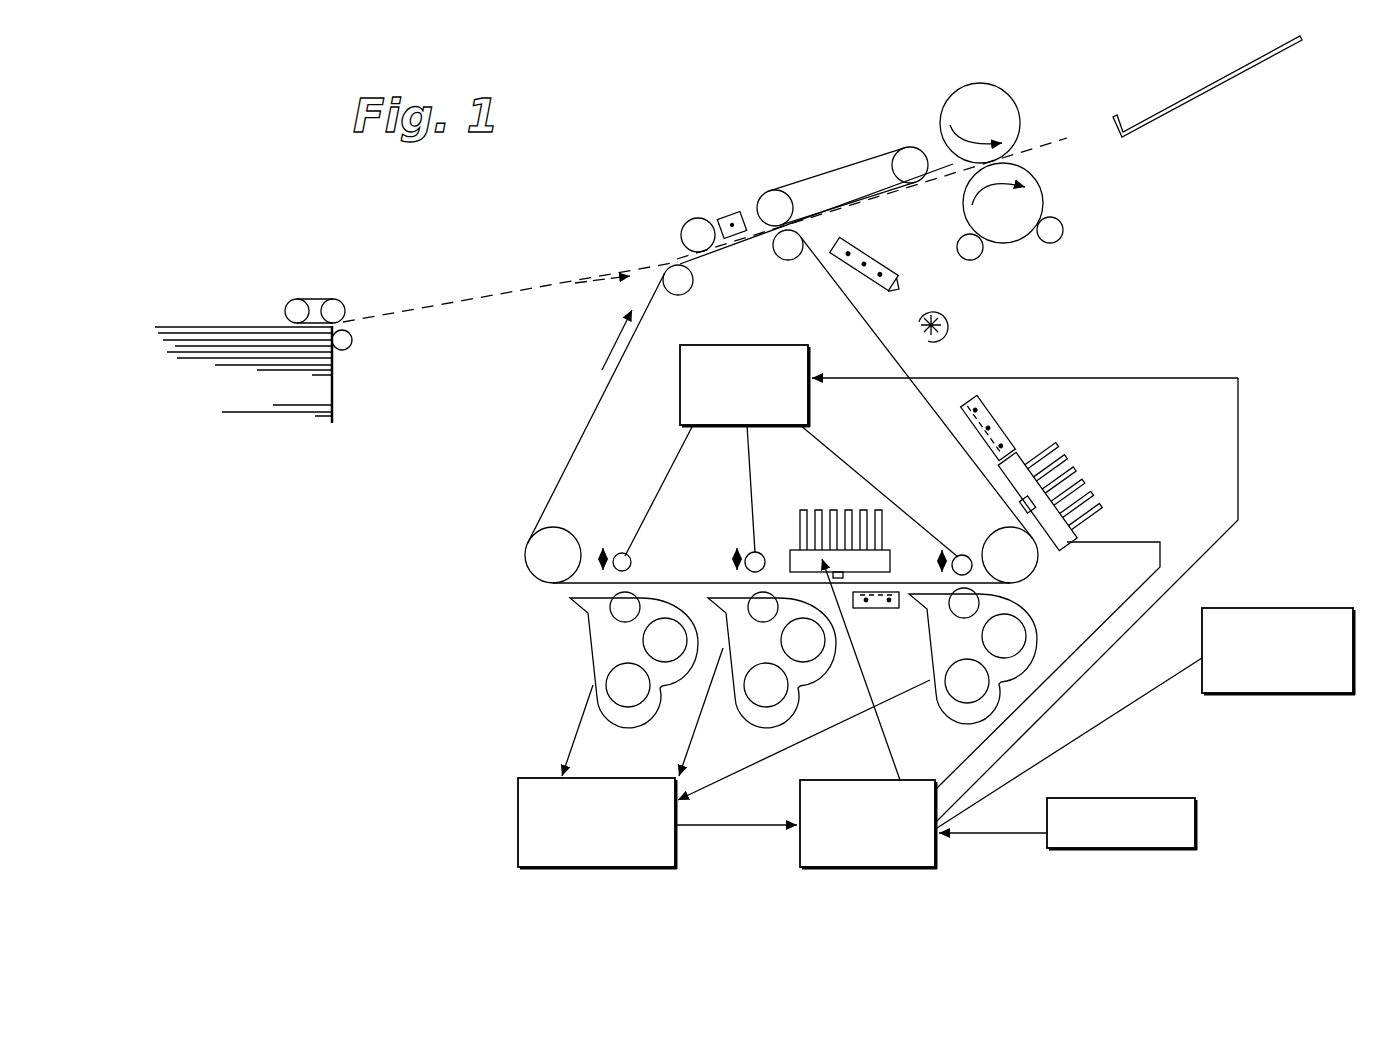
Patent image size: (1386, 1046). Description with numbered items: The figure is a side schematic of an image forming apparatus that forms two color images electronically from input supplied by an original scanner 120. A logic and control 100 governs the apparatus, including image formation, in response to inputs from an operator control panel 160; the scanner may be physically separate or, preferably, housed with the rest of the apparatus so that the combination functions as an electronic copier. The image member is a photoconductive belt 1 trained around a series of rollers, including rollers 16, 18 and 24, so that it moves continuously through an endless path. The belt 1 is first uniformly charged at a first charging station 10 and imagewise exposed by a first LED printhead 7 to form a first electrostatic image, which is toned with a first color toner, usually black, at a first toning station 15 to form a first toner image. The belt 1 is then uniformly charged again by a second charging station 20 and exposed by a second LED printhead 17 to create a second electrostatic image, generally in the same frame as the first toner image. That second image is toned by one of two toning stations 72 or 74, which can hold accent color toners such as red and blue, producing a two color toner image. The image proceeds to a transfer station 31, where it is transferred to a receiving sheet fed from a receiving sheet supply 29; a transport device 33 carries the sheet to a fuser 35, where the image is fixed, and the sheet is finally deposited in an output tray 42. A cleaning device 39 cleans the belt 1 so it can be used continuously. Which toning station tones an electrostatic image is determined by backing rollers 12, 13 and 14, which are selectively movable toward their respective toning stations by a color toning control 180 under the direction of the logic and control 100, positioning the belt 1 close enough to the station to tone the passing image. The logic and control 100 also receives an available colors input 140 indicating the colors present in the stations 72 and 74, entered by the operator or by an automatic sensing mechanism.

The photoconductive belt 1 is at (937, 368).
The first LED printhead 7 is at (1085, 476).
The first charging station 10 is at (1016, 434).
The backing roller 12 is at (965, 554).
The backing roller 13 is at (750, 548).
The backing roller 14 is at (633, 560).
The first toning station 15 is at (1045, 617).
The roller 16 is at (537, 565).
The second LED printhead 17 is at (818, 510).
The roller 18 is at (1030, 566).
The second charging station 20 is at (882, 610).
The roller 24 is at (793, 248).
The receiving sheet supply 29 is at (312, 376).
The transfer station 31 is at (732, 210).
The transport device 33 is at (850, 163).
The fuser 35 is at (1020, 86).
The cleaning device 39 is at (958, 320).
The output tray 42 is at (1230, 82).
The toning station 72 is at (587, 648).
The toning station 74 is at (702, 675).
The logic and control 100 is at (800, 845).
The original scanner 120 is at (1198, 830).
The available colors input 140 is at (518, 812).
The operator control panel 160 is at (1343, 695).
The color toning control 180 is at (680, 387).